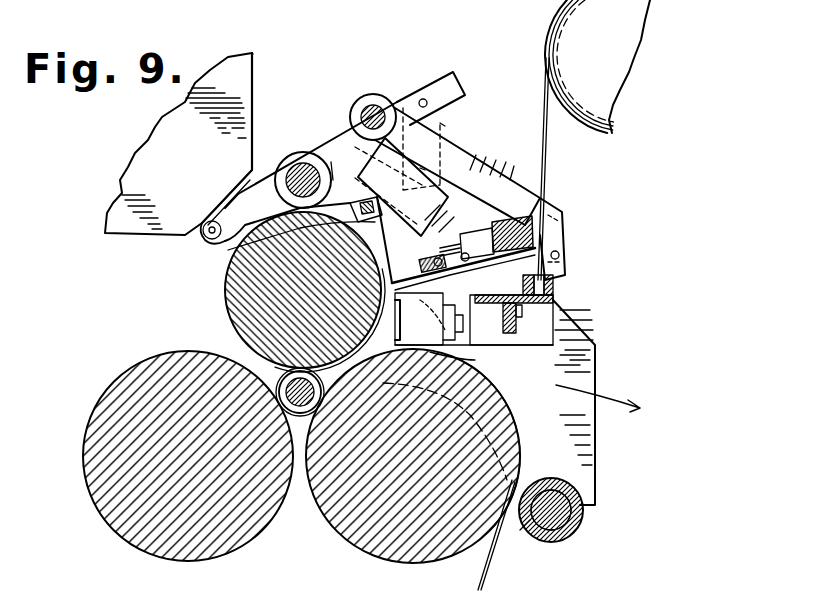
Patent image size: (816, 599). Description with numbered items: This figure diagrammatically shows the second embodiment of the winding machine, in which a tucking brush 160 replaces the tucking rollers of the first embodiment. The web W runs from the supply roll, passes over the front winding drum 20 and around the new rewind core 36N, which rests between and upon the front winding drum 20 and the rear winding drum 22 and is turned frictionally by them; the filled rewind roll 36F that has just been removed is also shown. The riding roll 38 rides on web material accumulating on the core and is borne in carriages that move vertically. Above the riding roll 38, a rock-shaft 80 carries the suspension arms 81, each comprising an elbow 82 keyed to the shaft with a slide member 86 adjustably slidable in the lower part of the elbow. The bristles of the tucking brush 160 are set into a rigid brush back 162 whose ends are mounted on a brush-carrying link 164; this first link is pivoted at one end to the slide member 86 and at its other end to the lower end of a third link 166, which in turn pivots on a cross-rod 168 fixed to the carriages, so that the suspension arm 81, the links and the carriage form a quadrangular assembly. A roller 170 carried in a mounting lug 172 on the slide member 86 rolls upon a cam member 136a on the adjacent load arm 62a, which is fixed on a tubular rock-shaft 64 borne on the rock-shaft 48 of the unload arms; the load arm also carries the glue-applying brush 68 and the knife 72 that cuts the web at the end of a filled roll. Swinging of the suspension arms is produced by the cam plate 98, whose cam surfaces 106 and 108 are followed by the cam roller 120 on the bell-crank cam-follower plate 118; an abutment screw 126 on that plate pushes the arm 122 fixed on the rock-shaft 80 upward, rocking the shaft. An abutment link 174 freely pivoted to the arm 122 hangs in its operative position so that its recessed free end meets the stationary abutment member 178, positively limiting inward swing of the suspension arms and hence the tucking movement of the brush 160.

The cam surface 106 is at (254, 70).
The cam plate 98 is at (138, 154).
The cam surface 108 is at (238, 188).
The cam-follower plate 118 is at (258, 152).
The rock-shaft 80 is at (300, 150).
The elbow 82 is at (336, 140).
The cross-rod 168 is at (374, 100).
The arm 122 is at (456, 84).
The abutment link 174 is at (440, 124).
The suspension arm 81 is at (426, 160).
The web W is at (540, 115).
The third link 166 is at (506, 185).
The filled rewind roll 36F is at (620, 72).
The slide member 86 is at (452, 215).
The brush-carrying link 164 is at (470, 236).
The brush 68 is at (548, 262).
The brush back 162 is at (540, 270).
The mounting lug 172 is at (375, 225).
The tucking brush 160 is at (422, 262).
The roller 170 is at (450, 278).
The knife 72 is at (429, 319).
The abutment member 178 is at (511, 320).
The cam member 136a is at (470, 360).
The load arm 62a is at (598, 430).
The riding roll 38 is at (235, 294).
The abutment screw 126 is at (255, 244).
The cam roller 120 is at (205, 238).
The new rewind core 36N is at (280, 378).
The rear winding drum 22 is at (120, 508).
The front winding drum 20 is at (434, 545).
The rock-shaft 48 is at (572, 522).
The tubular rock-shaft 64 is at (525, 535).